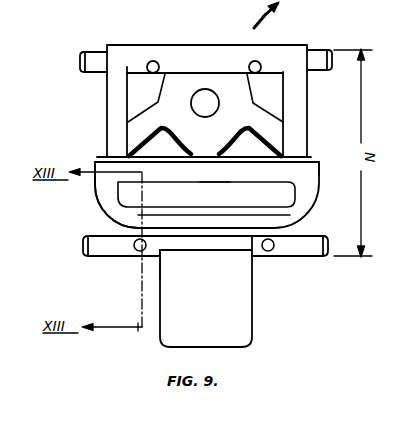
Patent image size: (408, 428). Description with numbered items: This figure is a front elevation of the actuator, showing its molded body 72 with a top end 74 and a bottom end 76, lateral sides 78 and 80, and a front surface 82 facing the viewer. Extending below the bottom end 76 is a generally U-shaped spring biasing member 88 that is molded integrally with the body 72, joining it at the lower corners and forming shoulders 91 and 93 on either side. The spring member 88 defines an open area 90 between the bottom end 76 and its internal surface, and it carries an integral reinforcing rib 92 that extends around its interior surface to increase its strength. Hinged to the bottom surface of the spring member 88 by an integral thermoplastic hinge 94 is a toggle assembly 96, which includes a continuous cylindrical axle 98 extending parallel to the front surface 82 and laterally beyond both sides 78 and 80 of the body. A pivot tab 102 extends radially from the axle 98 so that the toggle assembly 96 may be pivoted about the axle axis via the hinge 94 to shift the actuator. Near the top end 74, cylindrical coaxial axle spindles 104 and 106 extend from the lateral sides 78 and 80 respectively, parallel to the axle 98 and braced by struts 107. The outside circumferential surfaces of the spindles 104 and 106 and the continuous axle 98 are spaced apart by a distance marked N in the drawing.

The body 72 is at (230, 35).
The top end 74 is at (258, 46).
The bottom end 76 is at (215, 183).
The lateral side 78 is at (100, 115).
The lateral side 80 is at (309, 111).
The front surface 82 is at (219, 141).
The spring biasing member 88 is at (300, 204).
The open area 90 is at (128, 192).
The shoulder 91 is at (100, 163).
The reinforcing rib 92 is at (180, 194).
The shoulder 93 is at (303, 163).
The hinge 94 is at (243, 223).
The toggle assembly 96 is at (150, 271).
The continuous cylindrical axle 98 is at (310, 246).
The pivot tab 102 is at (230, 319).
The axle spindle 104 is at (88, 54).
The axle spindle 106 is at (316, 50).
The struts 107 is at (115, 78).